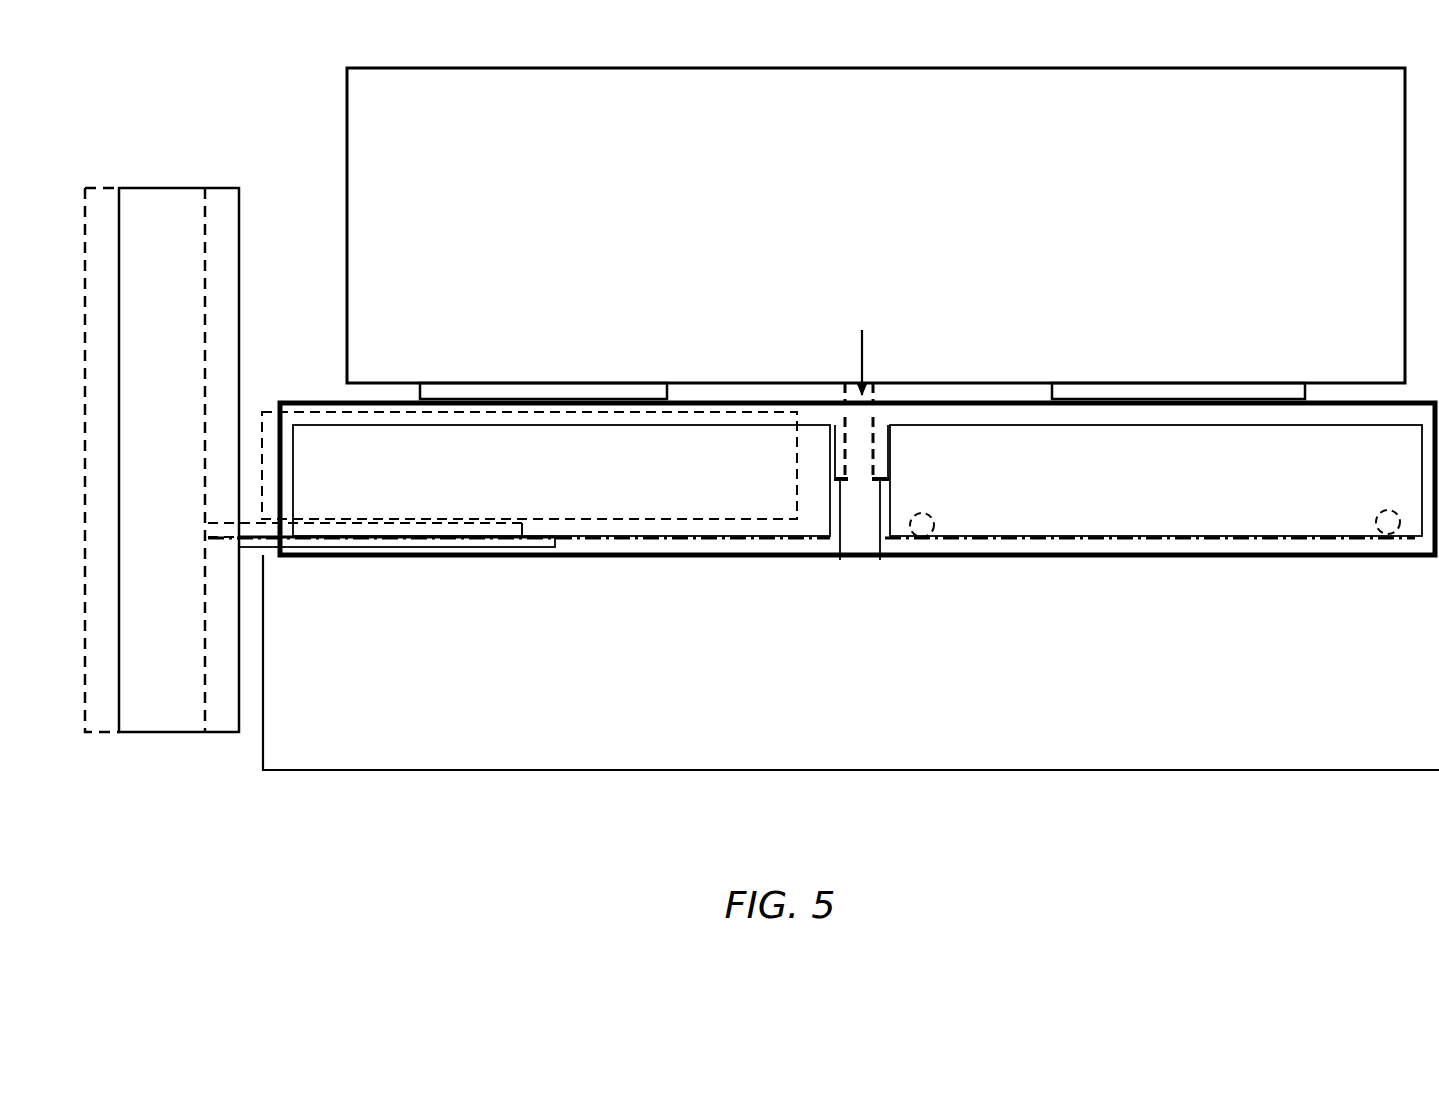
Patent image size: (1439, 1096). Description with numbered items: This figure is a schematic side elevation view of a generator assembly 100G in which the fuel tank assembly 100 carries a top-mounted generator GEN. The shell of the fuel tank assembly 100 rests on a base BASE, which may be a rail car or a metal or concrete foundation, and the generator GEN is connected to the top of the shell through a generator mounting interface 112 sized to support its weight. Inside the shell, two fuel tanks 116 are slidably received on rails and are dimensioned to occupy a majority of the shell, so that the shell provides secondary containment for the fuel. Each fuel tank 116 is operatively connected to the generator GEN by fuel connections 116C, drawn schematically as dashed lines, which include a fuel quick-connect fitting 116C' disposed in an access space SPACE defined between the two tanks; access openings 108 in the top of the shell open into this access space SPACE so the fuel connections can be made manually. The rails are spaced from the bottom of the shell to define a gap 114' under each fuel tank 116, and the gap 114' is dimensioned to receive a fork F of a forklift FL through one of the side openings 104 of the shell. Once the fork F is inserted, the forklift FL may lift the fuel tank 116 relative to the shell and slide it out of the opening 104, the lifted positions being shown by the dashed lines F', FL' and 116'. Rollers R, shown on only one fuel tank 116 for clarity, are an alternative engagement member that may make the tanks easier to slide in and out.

The generator assembly 100G is at (292, 64).
The fuel tank assembly 100 is at (312, 272).
The openings 104 is at (290, 476).
The access openings 108 is at (862, 330).
The generator mounting interface 112 is at (565, 393).
The gap 114' is at (811, 588).
The fuel tanks 116 is at (857, 480).
The lifted fuel tank 116' is at (529, 408).
The fuel connections 116C is at (847, 531).
The fuel quick-connect fitting 116C' is at (869, 382).
The fork F is at (415, 587).
The lifted fork F' is at (336, 488).
The forklift FL is at (194, 424).
The lifted forklift FL' is at (145, 424).
The rollers R is at (922, 512).
The access space SPACE is at (863, 533).
The generator GEN is at (1379, 116).
The base BASE is at (1366, 758).